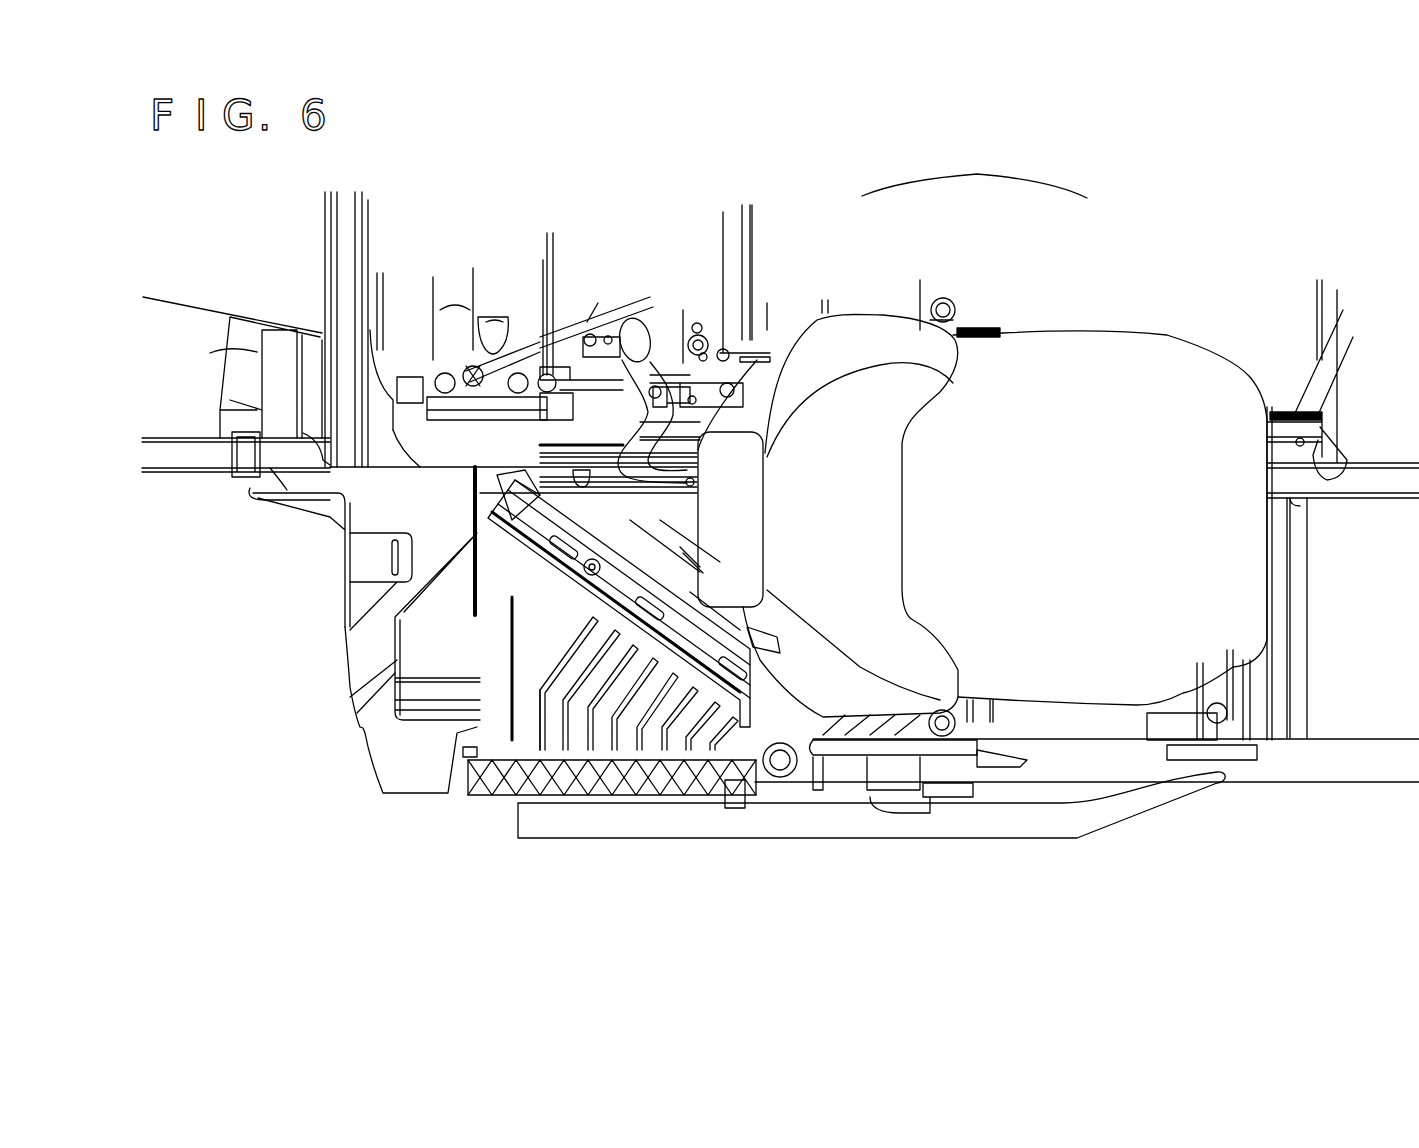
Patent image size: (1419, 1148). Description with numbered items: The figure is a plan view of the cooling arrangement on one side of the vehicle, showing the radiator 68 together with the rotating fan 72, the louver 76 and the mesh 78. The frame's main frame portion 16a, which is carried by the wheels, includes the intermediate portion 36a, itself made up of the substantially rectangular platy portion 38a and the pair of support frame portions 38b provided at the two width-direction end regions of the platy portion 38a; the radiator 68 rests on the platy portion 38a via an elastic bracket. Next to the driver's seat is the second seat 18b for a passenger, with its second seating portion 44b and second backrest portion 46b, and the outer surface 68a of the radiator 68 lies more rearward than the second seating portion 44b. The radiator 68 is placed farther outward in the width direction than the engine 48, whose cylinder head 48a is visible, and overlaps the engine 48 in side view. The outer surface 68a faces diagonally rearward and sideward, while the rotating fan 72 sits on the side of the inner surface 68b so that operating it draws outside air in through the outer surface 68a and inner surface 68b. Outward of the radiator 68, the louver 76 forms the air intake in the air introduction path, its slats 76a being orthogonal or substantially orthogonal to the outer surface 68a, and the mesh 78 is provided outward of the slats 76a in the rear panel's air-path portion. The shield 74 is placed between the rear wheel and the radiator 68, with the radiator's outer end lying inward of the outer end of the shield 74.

The main frame portion 16a is at (1192, 819).
The second seat 18b is at (974, 170).
The intermediate portion 36a is at (1270, 790).
The platy portion 38a is at (1355, 703).
The support frame portion 38b is at (1318, 770).
The second seating portion 44b is at (1058, 402).
The second backrest portion 46b is at (878, 403).
The engine 48 is at (525, 296).
The cylinder head 48a is at (453, 288).
The radiator 68 is at (584, 595).
The outer surface 68a is at (567, 577).
The inner surface 68b is at (683, 593).
The rotating fan 72 is at (642, 547).
The shield 74 is at (363, 660).
The louver 76 is at (531, 740).
The slats 76a is at (538, 722).
The mesh 78 is at (652, 798).